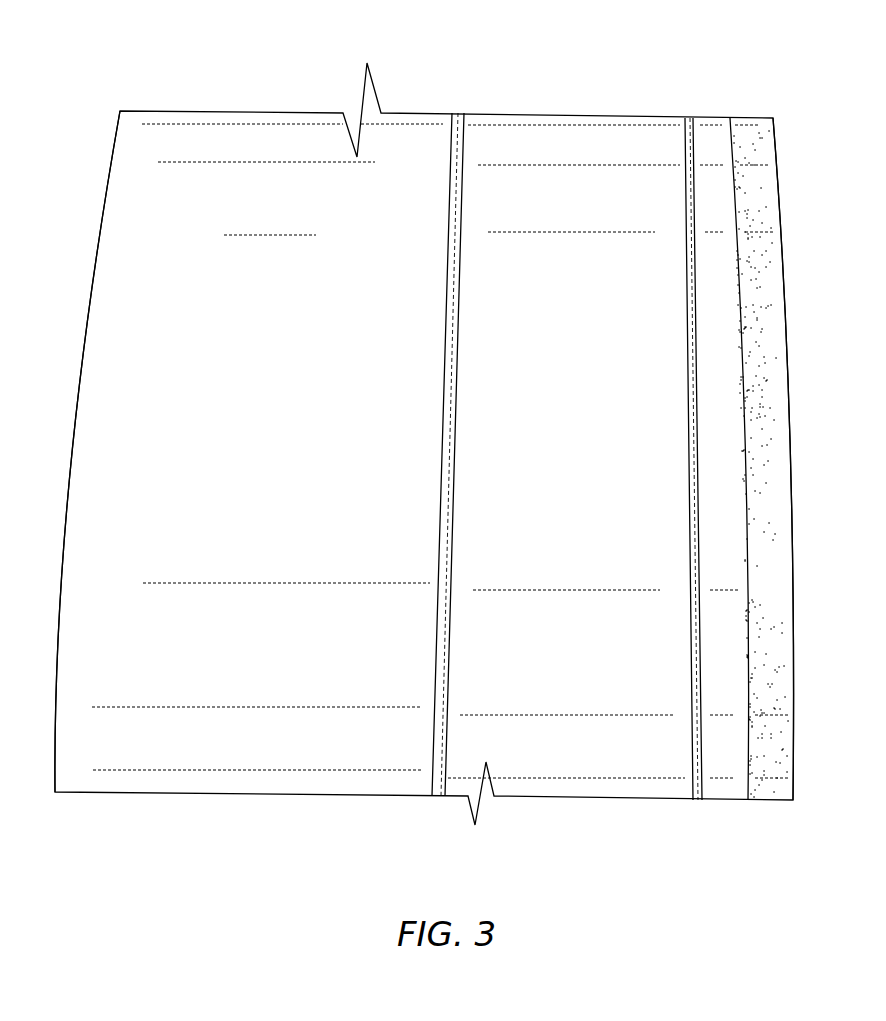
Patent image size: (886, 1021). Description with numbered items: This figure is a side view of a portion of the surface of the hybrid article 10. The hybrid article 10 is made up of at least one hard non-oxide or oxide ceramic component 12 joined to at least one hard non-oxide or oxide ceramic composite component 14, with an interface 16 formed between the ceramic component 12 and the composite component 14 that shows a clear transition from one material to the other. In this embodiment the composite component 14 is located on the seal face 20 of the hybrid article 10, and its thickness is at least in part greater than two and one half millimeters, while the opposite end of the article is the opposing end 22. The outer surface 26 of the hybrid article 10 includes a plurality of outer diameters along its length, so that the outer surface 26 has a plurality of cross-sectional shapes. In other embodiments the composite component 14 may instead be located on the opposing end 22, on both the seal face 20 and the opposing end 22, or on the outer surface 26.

The hybrid article 10 is at (793, 155).
The hard non-oxide or oxide ceramic component 12 is at (727, 550).
The hard non-oxide or oxide ceramic composite component 14 is at (777, 617).
The interface 16 is at (735, 155).
The seal face 20 is at (793, 418).
The opposing end 22 is at (70, 475).
The outer surface 26 is at (255, 147).